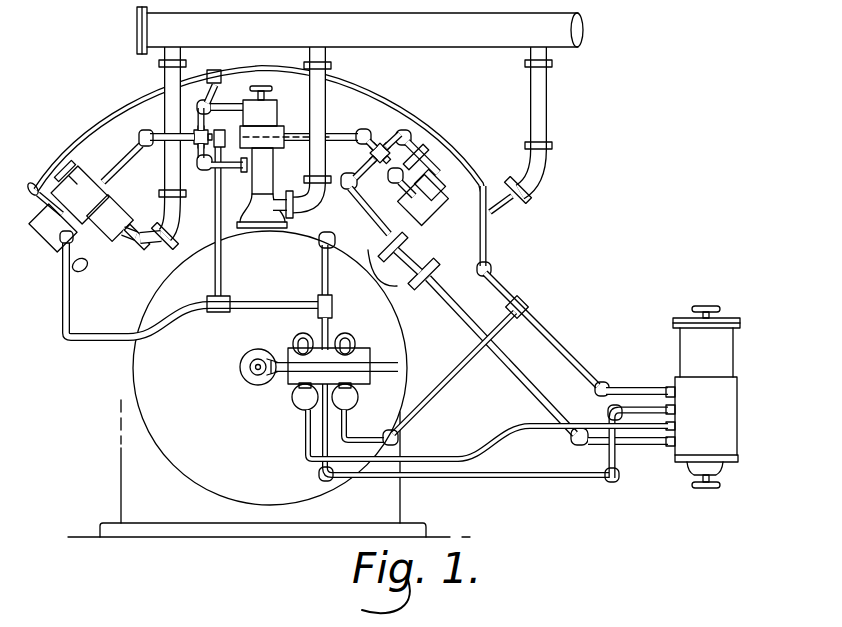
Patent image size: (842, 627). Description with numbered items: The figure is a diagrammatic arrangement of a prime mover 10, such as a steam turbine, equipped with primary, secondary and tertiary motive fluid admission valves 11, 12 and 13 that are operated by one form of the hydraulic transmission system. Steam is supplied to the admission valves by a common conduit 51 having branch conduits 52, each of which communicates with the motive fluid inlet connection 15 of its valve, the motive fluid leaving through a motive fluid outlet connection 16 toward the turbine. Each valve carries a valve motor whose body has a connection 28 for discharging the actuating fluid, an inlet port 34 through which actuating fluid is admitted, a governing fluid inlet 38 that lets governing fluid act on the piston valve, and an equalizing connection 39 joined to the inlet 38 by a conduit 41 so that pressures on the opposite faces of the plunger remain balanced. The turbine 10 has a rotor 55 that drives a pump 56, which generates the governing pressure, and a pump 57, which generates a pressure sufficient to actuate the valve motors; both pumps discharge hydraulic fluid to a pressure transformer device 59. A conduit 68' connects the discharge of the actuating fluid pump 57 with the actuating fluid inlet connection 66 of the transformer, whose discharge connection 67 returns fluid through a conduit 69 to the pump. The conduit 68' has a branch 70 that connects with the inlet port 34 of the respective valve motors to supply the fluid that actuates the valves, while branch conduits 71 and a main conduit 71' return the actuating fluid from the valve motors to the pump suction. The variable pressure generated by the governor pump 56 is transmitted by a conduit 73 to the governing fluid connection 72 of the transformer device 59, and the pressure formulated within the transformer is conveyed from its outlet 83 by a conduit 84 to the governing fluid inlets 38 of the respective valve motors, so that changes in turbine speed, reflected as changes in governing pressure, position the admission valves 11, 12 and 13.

The prime mover 10 is at (124, 487).
The primary motive fluid admission valve 11 is at (362, 244).
The secondary motive fluid admission valve 12 is at (247, 203).
The tertiary motive fluid admission valve 13 is at (152, 262).
The motive fluid inlet connection 15 is at (177, 241).
The motive fluid outlet connection 16 is at (262, 227).
The connection 28 is at (438, 200).
The inlet port 34 is at (447, 173).
The governing fluid inlet 38 is at (440, 157).
The equalizing connection 39 is at (442, 227).
The conduit 41 is at (202, 147).
The common conduit 51 is at (462, 34).
The branch conduits 52 is at (163, 77).
The rotor 55 is at (256, 374).
The pump 56 is at (300, 402).
The pump 57 is at (350, 401).
The pressure transformer device 59 is at (728, 390).
The actuating fluid inlet connection 66 is at (670, 392).
The discharge connection 67 is at (642, 396).
The conduit 68' is at (525, 359).
The conduit 69 is at (497, 481).
The branch 70 is at (487, 253).
The branch conduits 71 is at (181, 242).
The main conduit 71' is at (344, 327).
The governing fluid connection 72 is at (667, 432).
The conduit 73 is at (480, 452).
The outlet 83 is at (670, 448).
The conduit 84 is at (318, 133).